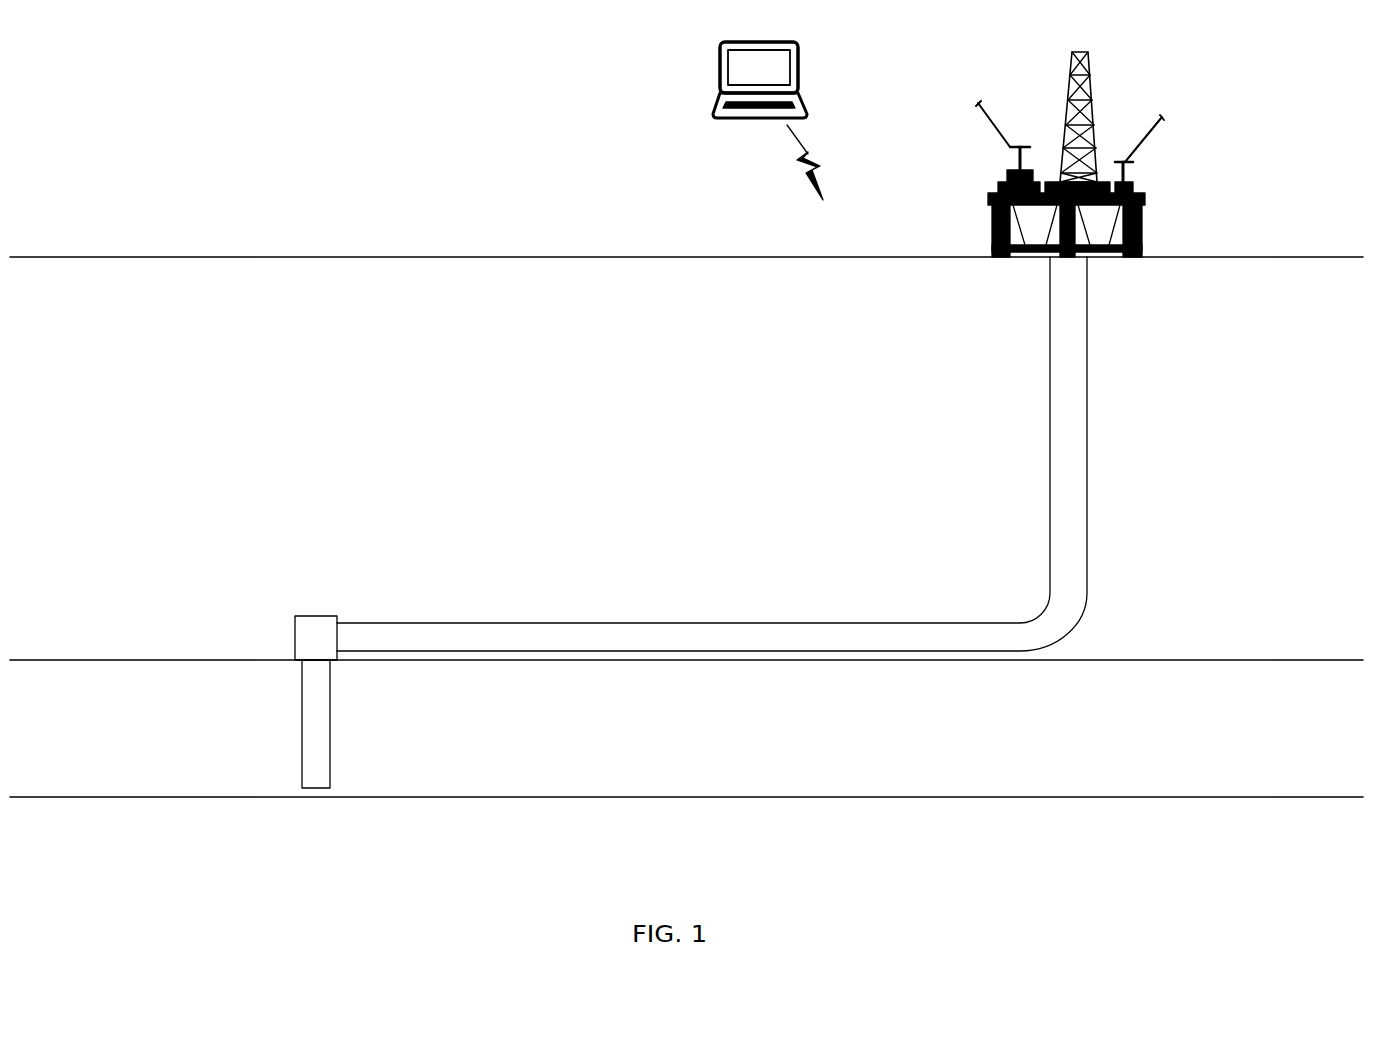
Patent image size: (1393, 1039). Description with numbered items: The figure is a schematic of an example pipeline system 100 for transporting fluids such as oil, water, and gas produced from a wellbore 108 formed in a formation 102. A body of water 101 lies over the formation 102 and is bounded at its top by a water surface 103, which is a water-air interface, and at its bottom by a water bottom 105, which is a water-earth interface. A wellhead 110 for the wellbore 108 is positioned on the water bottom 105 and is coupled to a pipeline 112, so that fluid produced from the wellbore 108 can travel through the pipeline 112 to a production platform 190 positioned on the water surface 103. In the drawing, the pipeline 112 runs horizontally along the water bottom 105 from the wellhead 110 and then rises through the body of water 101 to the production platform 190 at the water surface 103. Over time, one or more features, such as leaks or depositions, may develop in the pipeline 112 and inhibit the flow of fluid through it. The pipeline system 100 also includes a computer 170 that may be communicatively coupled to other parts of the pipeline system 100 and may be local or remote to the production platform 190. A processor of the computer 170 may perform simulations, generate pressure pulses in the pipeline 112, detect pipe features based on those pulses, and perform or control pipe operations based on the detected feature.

The pipeline system 100 is at (288, 104).
The body of water 101 is at (95, 335).
The formation 102 is at (112, 755).
The water surface 103 is at (218, 257).
The water bottom 105 is at (83, 660).
The wellbore 108 is at (302, 728).
The wellhead 110 is at (295, 640).
The pipeline 112 is at (677, 623).
The computer 170 is at (720, 67).
The production platform 190 is at (988, 198).